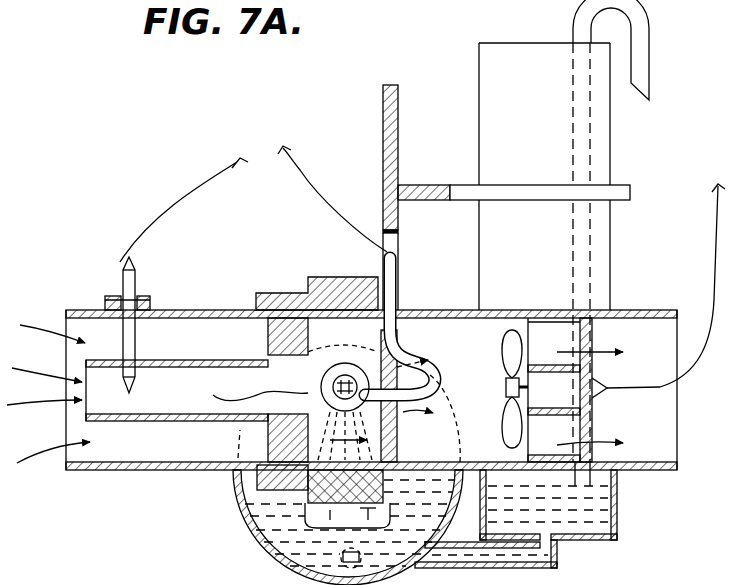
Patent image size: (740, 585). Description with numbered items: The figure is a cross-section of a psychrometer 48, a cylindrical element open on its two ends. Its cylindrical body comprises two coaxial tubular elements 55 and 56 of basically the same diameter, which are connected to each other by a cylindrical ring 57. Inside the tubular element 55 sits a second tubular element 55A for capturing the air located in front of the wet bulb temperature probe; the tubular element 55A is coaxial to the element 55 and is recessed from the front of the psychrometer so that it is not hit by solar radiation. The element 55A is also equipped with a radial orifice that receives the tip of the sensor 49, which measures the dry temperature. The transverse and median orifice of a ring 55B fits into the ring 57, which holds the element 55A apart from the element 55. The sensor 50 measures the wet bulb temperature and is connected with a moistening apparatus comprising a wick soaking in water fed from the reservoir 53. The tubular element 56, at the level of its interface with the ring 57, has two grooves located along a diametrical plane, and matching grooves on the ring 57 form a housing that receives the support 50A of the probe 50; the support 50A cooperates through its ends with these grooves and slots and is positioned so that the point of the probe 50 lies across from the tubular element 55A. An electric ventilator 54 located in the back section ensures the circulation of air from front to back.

The psychrometer 48 is at (82, 308).
The sensor 49 is at (148, 296).
The sensor 50 is at (437, 352).
The support 50A is at (392, 450).
The reservoir 53 is at (600, 136).
The electric ventilator 54 is at (568, 399).
The tubular element 55 is at (200, 310).
The second tubular element 55A is at (188, 425).
The ring 55B is at (266, 342).
The tubular element 56 is at (645, 312).
The cylindrical ring 57 is at (283, 276).